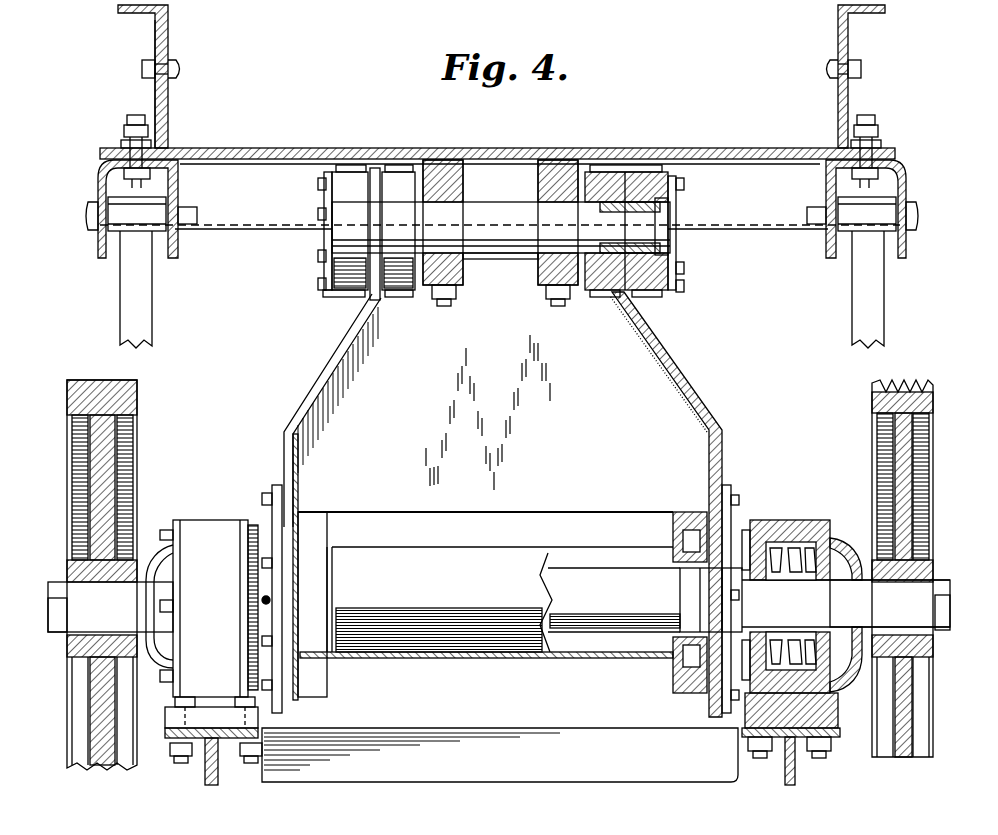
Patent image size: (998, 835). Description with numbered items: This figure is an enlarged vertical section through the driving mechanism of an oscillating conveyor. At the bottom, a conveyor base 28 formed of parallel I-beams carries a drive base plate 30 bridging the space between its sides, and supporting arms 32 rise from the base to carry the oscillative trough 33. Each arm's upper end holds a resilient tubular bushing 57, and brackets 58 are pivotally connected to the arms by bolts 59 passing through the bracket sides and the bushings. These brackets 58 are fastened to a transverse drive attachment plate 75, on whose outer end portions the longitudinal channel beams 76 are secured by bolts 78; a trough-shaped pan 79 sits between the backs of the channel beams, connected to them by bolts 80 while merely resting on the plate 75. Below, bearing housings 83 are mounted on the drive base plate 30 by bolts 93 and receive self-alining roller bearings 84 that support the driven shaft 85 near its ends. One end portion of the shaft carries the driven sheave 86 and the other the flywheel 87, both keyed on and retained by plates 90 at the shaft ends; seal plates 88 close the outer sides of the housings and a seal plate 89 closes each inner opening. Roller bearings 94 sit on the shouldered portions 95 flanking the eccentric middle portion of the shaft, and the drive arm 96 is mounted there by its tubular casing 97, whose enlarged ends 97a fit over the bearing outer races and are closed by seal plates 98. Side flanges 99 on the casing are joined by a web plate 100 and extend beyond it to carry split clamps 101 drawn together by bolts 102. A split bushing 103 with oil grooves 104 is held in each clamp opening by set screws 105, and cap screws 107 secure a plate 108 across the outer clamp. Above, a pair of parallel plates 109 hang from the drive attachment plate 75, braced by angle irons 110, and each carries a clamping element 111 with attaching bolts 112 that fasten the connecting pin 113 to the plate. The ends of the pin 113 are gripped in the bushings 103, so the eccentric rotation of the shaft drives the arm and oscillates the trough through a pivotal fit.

The conveyor base 28 is at (204, 768).
The drive base plate 30 is at (474, 728).
The supporting arms 32 is at (154, 312).
The oscillative trough 33 is at (153, 88).
The resilient tubular bushing 57 is at (158, 238).
The brackets 58 is at (178, 246).
The bolts 59 is at (198, 212).
The drive attachment plate 75 is at (760, 164).
The channel beams 76 is at (154, 30).
The bolts 78 is at (126, 120).
The trough-shaped pan 79 is at (340, 148).
The bolts 80 is at (178, 68).
The bearing housings 83 is at (214, 525).
The self-alining roller bearings 84 is at (778, 542).
The driven shaft 85 is at (60, 590).
The driven sheave 86 is at (934, 392).
The flywheel 87 is at (72, 394).
The seal plates 88 is at (165, 548).
The seal plate 89 is at (260, 545).
The plates 90 is at (56, 622).
The bolts 93 is at (246, 763).
The roller bearings 94 is at (690, 570).
The shouldered portions 95 is at (690, 590).
The drive arm 96 is at (697, 410).
The tubular casing 97 is at (562, 658).
The enlarged ends 97a is at (318, 510).
The seal plates 98 is at (272, 495).
The side flanges 99 is at (330, 358).
The web plate 100 is at (473, 512).
The split clamps 101 is at (345, 297).
The bolts 102 is at (397, 168).
The split bushing 103 is at (640, 245).
The oil grooves 104 is at (632, 212).
The set screws 105 is at (660, 215).
The cap screws 107 is at (318, 184).
The plate 108 is at (322, 198).
The parallel plates 109 is at (448, 158).
The angle irons 110 is at (777, 228).
The clamping element 111 is at (462, 274).
The attaching bolts 112 is at (448, 304).
The connecting pin 113 is at (501, 227).